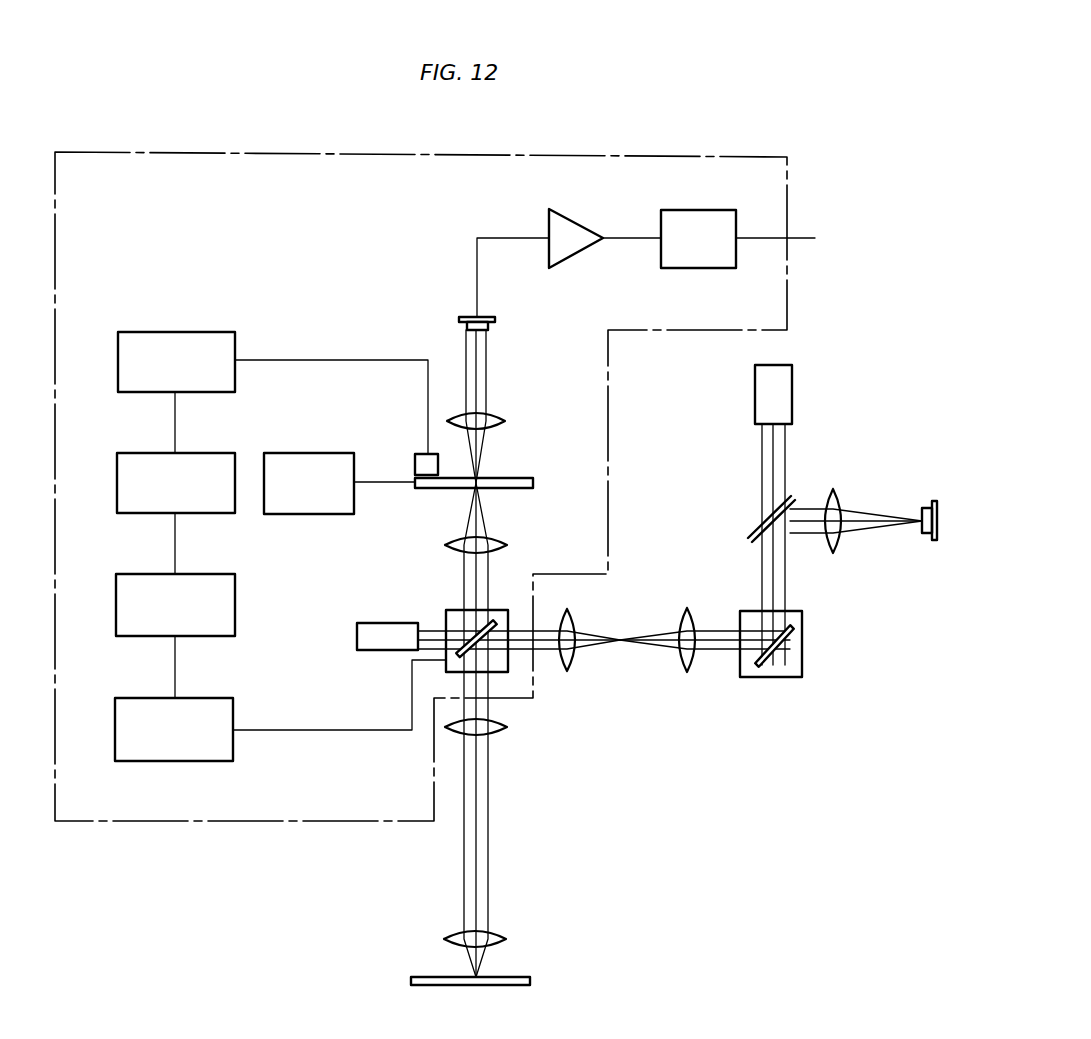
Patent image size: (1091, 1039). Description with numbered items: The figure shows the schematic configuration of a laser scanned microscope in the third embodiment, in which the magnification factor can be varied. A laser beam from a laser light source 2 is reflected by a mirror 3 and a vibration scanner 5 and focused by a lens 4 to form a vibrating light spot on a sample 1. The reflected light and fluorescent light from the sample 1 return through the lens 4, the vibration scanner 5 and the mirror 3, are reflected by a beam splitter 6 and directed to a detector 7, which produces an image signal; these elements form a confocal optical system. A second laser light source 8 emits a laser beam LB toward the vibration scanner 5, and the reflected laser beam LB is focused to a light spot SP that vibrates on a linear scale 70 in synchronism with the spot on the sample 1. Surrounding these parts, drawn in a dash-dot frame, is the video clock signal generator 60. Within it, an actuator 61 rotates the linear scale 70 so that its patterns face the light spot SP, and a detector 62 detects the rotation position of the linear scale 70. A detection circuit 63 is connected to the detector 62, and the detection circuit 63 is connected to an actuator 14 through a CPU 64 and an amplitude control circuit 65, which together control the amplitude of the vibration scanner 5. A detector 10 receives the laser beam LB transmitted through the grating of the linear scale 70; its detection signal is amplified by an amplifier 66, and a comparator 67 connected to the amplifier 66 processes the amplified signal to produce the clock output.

The sample 1 is at (506, 977).
The laser light source 2 is at (792, 391).
The mirror 3 is at (795, 633).
The lens 4 is at (445, 936).
The vibration scanner 5 is at (494, 616).
The beam splitter 6 is at (757, 527).
The detector 7 is at (922, 506).
The laser light source 8 is at (366, 622).
The detector 10 is at (495, 321).
The actuator 14 is at (196, 698).
The video clock signal generator 60 is at (263, 152).
The actuator 61 is at (318, 453).
The detector 62 is at (414, 461).
The detection circuit 63 is at (196, 332).
The CPU 64 is at (196, 453).
The amplitude control circuit 65 is at (196, 574).
The amplifier 66 is at (561, 209).
The comparator 67 is at (700, 210).
The linear scale 70 is at (515, 478).
The laser beam LB is at (432, 625).
The light spot SP is at (466, 492).